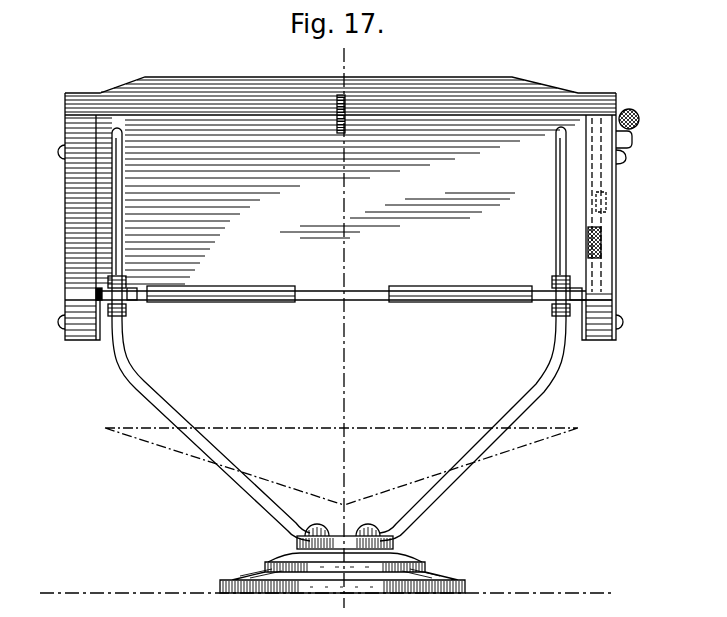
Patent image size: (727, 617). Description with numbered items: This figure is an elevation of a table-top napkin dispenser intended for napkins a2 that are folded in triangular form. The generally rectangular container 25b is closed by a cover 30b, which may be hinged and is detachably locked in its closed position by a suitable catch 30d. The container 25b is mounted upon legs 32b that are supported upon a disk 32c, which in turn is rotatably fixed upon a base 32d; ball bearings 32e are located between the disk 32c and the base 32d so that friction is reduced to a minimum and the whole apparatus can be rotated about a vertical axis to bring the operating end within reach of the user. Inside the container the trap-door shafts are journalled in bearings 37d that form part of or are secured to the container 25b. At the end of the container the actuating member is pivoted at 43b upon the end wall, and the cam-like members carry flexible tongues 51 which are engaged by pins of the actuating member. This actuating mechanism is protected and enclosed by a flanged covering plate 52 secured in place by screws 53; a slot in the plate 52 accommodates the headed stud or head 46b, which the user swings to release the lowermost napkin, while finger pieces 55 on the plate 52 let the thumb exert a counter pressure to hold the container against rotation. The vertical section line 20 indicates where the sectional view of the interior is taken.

The section line 20— 20 is at (324, 605).
The cover 30b is at (512, 78).
The catch 30d is at (341, 130).
The head 46b is at (640, 112).
The finger piece 55 is at (632, 142).
The flanged covering plate 52 is at (67, 207).
The pivot 43b is at (608, 205).
The flexible tongue 51 is at (613, 238).
The screw 53 is at (57, 152).
The container 25b is at (352, 202).
The bearing 37d is at (133, 295).
The leg 32b is at (157, 395).
The napkin a2 is at (372, 428).
The base 32d is at (263, 563).
The disk 32c is at (390, 543).
The ball bearing 32e is at (391, 551).